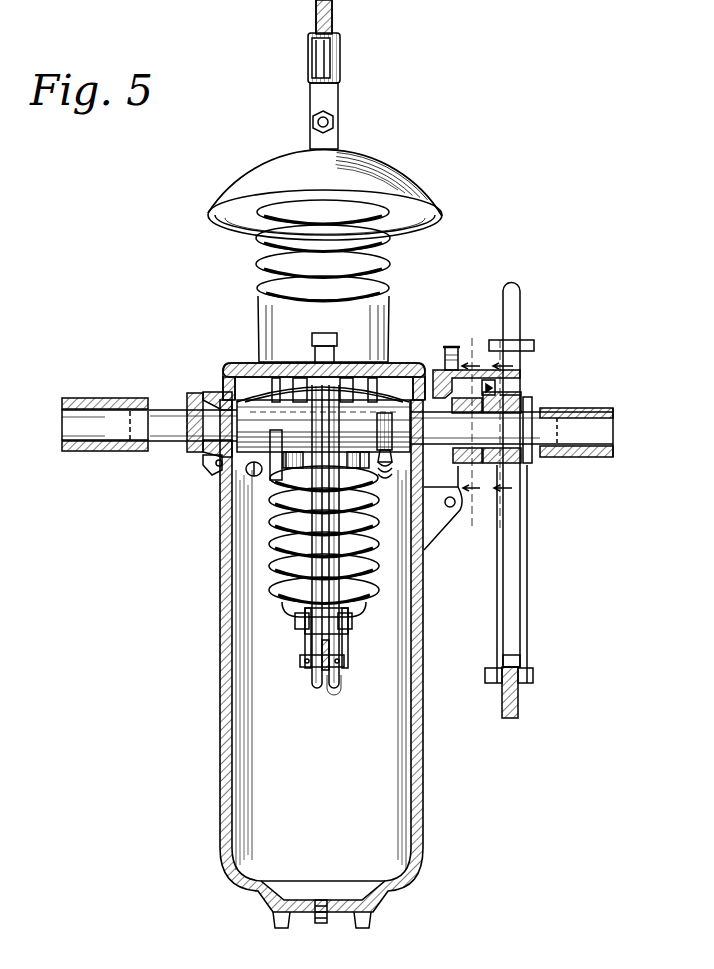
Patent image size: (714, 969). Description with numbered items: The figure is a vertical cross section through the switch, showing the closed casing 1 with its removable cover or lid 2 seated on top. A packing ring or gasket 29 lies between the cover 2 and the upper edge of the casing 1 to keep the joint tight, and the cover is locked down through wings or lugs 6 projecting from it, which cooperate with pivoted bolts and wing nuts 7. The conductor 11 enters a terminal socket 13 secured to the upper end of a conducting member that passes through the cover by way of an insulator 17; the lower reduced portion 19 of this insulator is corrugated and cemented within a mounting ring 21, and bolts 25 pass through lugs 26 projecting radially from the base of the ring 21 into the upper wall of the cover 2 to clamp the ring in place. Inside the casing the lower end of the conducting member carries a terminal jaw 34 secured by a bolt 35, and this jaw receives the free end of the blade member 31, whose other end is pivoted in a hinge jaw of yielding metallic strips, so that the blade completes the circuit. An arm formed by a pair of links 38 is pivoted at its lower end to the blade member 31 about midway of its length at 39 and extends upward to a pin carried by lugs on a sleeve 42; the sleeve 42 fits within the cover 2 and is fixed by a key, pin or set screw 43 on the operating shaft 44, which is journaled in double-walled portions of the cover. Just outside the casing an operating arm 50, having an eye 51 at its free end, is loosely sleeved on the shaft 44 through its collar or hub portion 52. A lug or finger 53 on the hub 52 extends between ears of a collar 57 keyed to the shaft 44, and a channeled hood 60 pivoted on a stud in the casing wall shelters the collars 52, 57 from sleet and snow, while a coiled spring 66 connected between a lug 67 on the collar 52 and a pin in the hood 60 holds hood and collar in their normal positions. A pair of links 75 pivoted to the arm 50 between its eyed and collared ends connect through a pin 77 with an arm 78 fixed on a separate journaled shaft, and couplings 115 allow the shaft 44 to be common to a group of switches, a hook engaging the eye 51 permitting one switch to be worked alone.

The casing 1 is at (220, 712).
The cover 2 is at (227, 365).
The wings or lugs 6 is at (504, 435).
The wing nuts 7 is at (471, 433).
The conductor 11 is at (338, 14).
The terminal socket 13 is at (326, 60).
The insulator 17 is at (405, 160).
The lower reduced portion of insulator 19 is at (290, 565).
The mounting ring 21 is at (280, 303).
The bolts 25 is at (334, 320).
The lugs 26 is at (327, 350).
The packing ring or gasket 29 is at (215, 468).
The blade member 31 is at (318, 690).
The terminal jaw 34 is at (343, 682).
The bolt 35 is at (352, 624).
The links 38 is at (301, 638).
The pivot on blade member 39 is at (300, 660).
The sleeve 42 is at (260, 410).
The key, pin or set screw 43 is at (386, 484).
The shaft 44 is at (160, 430).
The operating arm 50 is at (500, 362).
The eye 51 is at (518, 293).
The collar or hub portion 52 is at (530, 466).
The lug or finger 53 is at (452, 347).
The collar 57 is at (445, 505).
The channeled hood 60 is at (496, 384).
The coiled spring 66 is at (494, 389).
The lug 67 is at (520, 396).
The links 75 is at (498, 615).
The pin 77 is at (533, 675).
The arm 78 is at (518, 700).
The couplings 115 is at (85, 398).